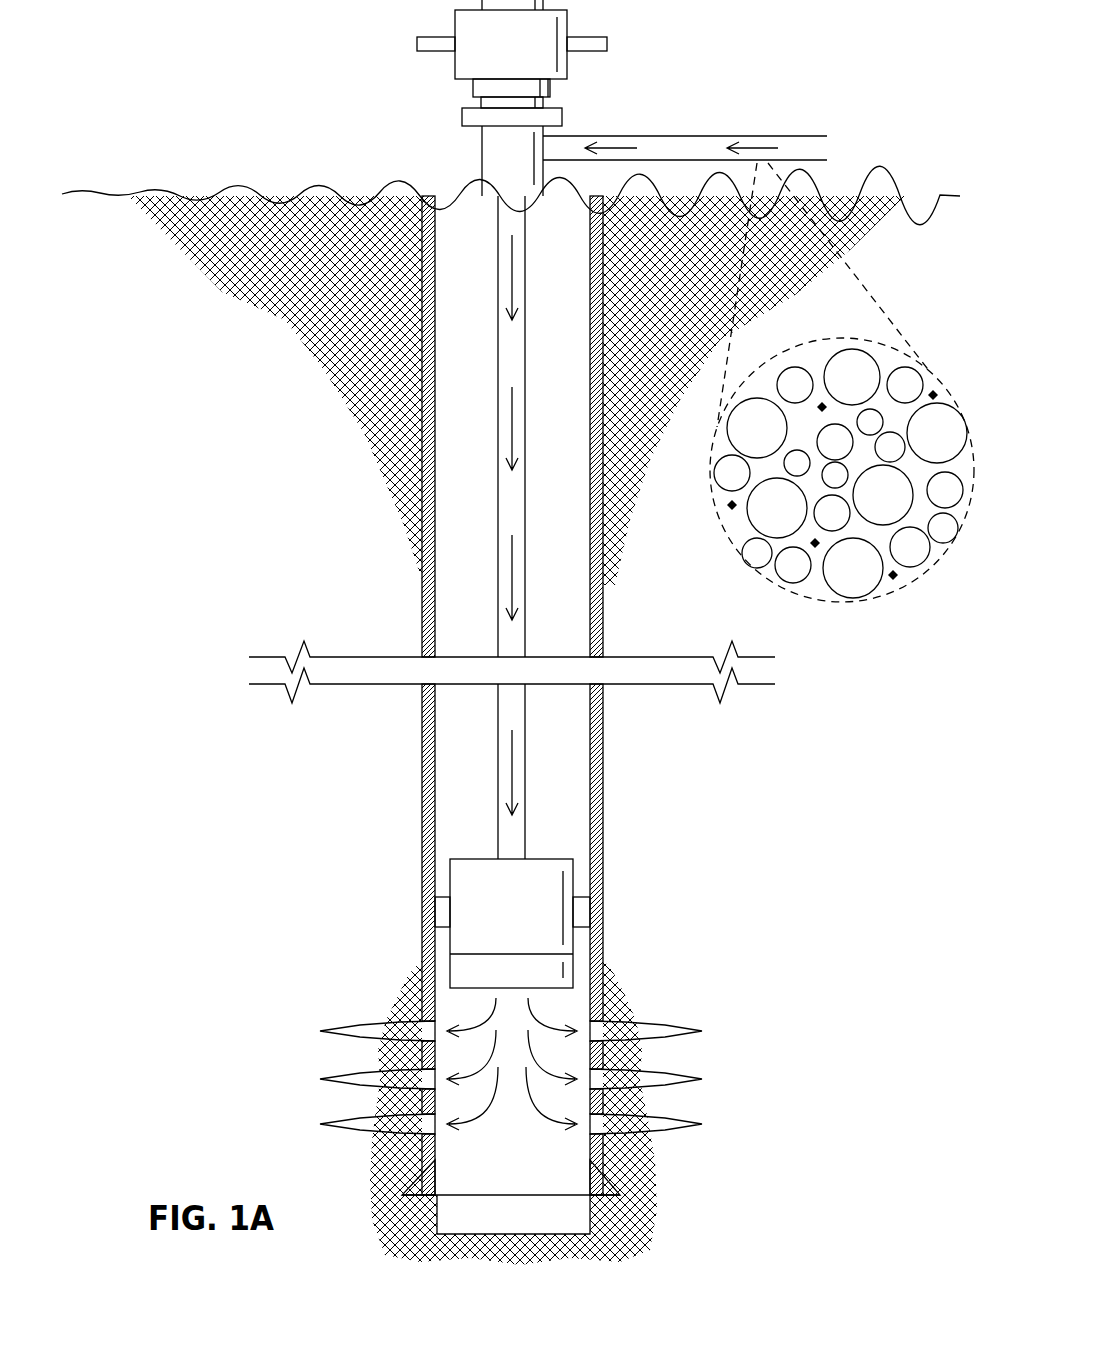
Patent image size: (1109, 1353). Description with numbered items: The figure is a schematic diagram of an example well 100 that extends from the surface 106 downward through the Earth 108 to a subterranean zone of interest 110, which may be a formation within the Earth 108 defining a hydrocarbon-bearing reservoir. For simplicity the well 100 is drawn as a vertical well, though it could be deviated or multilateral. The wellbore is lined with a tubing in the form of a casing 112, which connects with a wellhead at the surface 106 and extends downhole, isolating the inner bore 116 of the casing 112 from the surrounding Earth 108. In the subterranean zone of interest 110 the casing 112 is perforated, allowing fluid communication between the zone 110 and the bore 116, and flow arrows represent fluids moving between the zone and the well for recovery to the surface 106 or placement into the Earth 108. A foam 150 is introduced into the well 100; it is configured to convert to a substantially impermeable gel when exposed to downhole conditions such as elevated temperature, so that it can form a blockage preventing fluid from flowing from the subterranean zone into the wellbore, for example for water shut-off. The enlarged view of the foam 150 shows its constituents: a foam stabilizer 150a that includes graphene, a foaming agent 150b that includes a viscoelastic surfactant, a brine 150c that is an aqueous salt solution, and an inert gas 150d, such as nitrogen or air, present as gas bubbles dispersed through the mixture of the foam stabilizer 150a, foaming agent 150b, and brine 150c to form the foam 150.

The well 100 is at (298, 84).
The surface 106 is at (103, 194).
The Earth 108 is at (289, 422).
The subterranean zone of interest 110 is at (851, 996).
The casing 112 is at (420, 623).
The inner bore 116 is at (574, 618).
The foam 150 is at (757, 150).
The foam stabilizer 150a is at (821, 403).
The foaming agent 150b is at (873, 597).
The brine 150c is at (818, 592).
The inert gas 150d is at (913, 550).